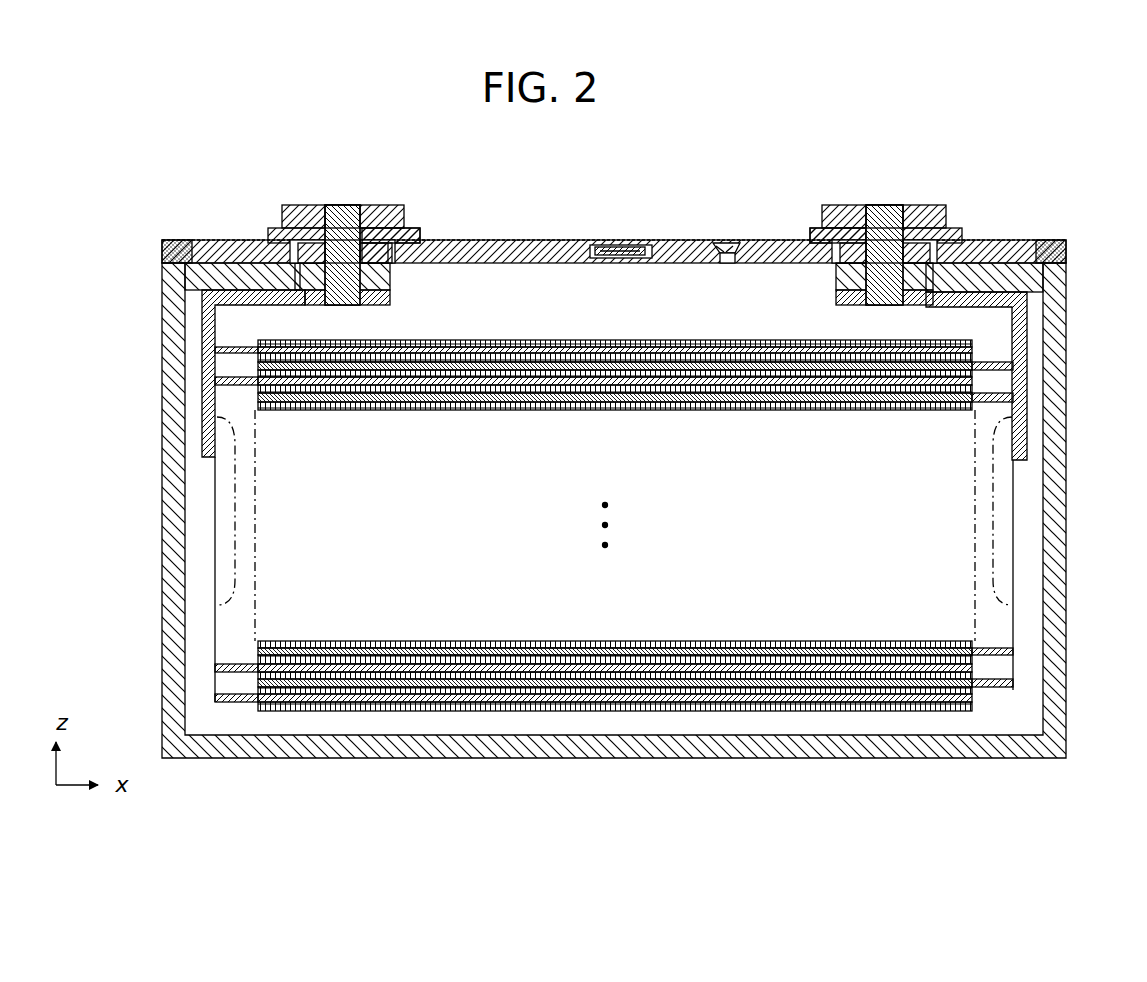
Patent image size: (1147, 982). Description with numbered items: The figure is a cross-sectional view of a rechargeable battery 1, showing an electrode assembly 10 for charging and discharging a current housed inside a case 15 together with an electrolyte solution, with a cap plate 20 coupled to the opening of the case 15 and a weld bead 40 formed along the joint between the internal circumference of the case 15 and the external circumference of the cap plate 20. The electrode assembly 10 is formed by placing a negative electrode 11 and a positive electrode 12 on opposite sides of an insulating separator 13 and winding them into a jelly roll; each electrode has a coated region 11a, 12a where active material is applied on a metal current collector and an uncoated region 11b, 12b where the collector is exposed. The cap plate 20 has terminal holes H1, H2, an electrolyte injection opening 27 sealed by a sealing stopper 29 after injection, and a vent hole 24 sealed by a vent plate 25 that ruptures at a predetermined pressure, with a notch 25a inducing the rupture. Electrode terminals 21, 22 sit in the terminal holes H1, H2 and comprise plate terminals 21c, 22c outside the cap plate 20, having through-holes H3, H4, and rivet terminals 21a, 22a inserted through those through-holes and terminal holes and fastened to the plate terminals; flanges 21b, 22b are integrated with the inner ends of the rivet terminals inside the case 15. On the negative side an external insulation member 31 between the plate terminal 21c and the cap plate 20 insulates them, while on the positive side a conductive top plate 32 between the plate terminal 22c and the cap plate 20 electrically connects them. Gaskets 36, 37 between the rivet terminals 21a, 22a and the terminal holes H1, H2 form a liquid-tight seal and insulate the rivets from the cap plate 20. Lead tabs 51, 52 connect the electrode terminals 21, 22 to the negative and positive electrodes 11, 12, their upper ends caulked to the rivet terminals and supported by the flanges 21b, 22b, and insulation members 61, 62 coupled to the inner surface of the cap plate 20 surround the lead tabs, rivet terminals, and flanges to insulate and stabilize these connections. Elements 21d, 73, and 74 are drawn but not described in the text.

The rechargeable battery 1 is at (656, 125).
The electrode assembly 10 is at (614, 601).
The negative electrode 11 is at (589, 604).
The coated region 11a is at (345, 711).
The uncoated region 11b is at (232, 582).
The positive electrode 12 is at (639, 610).
The coated region 12a is at (860, 711).
The uncoated region 12b is at (996, 587).
The separator 13 is at (590, 700).
The case 15 is at (1068, 441).
The cap plate 20 is at (528, 250).
The electrode terminal 21 is at (354, 309).
The rivet terminal 21a is at (345, 300).
The flange 21b is at (420, 246).
The plate terminal 21c is at (308, 206).
The first rivet terminal 21d is at (312, 300).
The electrode terminal 22 is at (861, 293).
The rivet terminal 22a is at (880, 300).
The flange 22b is at (810, 282).
The plate terminal 22c is at (926, 206).
The vent hole 24 is at (618, 264).
The vent plate 25 is at (648, 247).
The notch 25a is at (612, 247).
The electrolyte injection opening 27 is at (735, 250).
The sealing stopper 29 is at (722, 246).
The external insulation member 31 is at (406, 228).
The conductive top plate 32 is at (816, 228).
The gasket 36 is at (287, 236).
The gasket 37 is at (955, 236).
The weld bead 40 is at (570, 240).
The lead tab 51 is at (206, 322).
The lead tab 52 is at (1030, 322).
The insulation member 61 is at (172, 240).
The insulation member 62 is at (1052, 258).
The first lower insulator 73 is at (386, 298).
The second lower insulator 74 is at (242, 268).
The terminal hole H1 is at (373, 204).
The terminal hole H2 is at (862, 208).
The through-hole H3 is at (331, 204).
The through-hole H4 is at (896, 204).